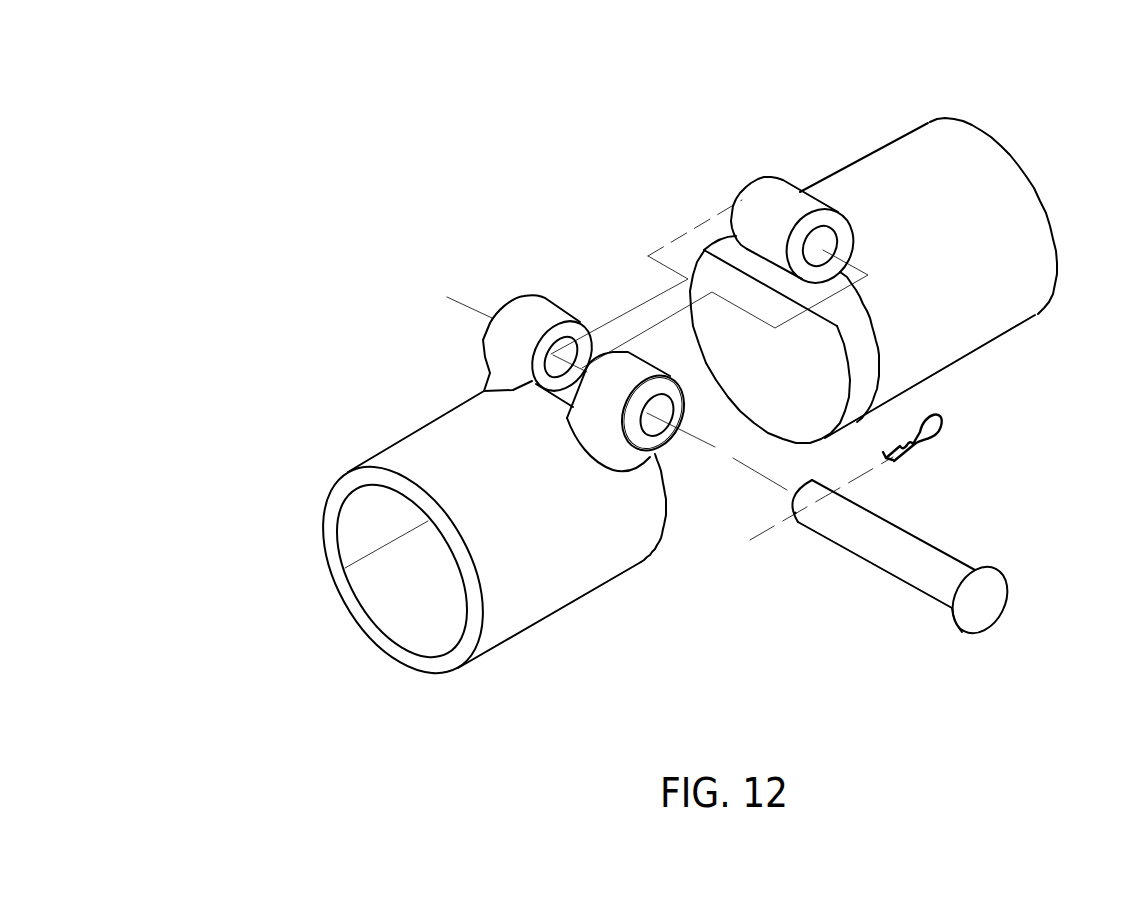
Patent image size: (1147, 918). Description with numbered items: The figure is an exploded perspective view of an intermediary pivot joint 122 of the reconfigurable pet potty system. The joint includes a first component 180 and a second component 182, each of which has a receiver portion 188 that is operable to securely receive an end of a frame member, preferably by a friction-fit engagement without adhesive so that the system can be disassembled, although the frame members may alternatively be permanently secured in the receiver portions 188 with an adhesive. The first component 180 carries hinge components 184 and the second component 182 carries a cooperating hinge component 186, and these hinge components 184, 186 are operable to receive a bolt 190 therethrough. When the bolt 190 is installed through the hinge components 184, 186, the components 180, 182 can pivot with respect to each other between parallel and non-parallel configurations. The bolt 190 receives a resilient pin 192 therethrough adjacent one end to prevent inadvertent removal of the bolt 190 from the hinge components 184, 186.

The intermediary pivot joint 122 is at (298, 79).
The first component 180 is at (415, 450).
The second component 182 is at (865, 172).
The hinge component 184 is at (543, 317).
The hinge component 186 is at (800, 200).
The receiver portion 188 is at (330, 518).
The bolt 190 is at (910, 543).
The resilient pin 192 is at (945, 421).